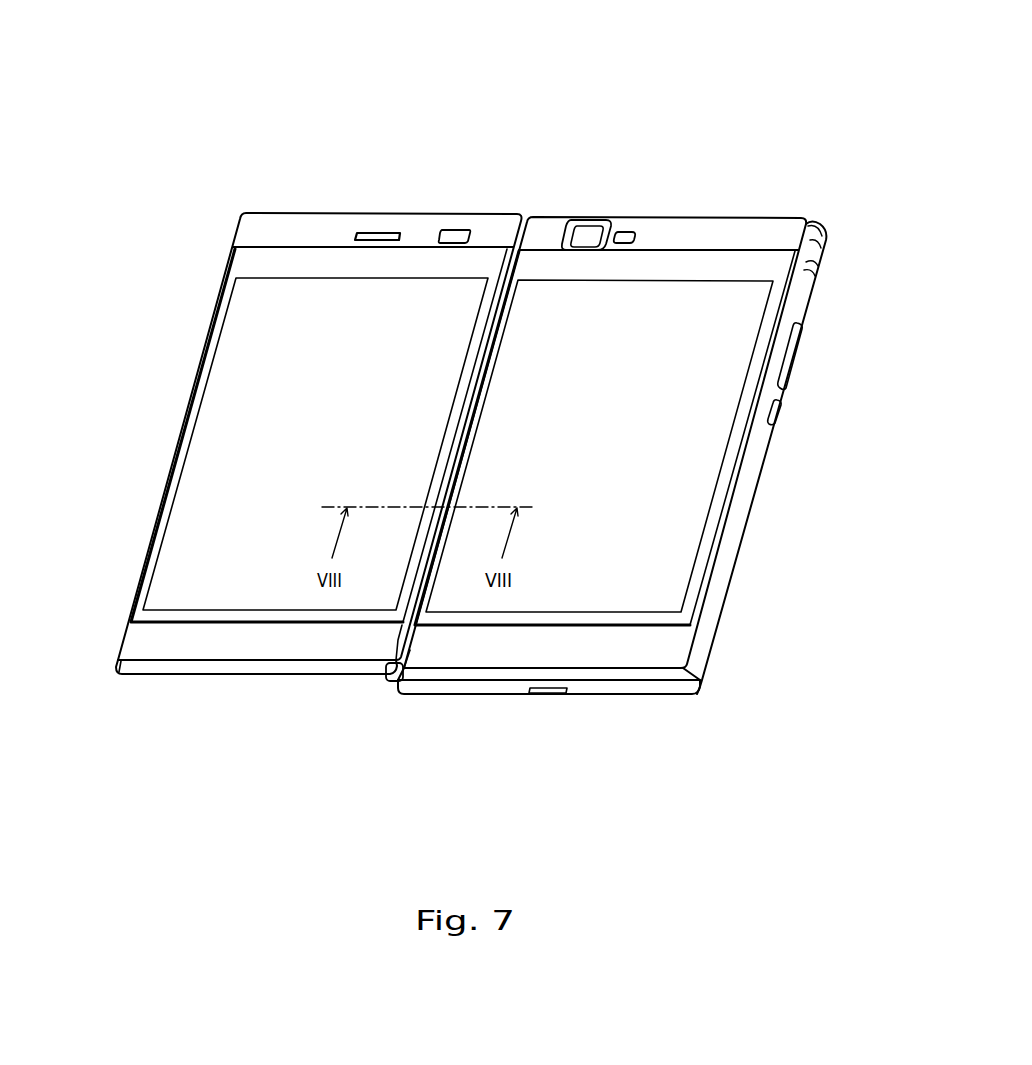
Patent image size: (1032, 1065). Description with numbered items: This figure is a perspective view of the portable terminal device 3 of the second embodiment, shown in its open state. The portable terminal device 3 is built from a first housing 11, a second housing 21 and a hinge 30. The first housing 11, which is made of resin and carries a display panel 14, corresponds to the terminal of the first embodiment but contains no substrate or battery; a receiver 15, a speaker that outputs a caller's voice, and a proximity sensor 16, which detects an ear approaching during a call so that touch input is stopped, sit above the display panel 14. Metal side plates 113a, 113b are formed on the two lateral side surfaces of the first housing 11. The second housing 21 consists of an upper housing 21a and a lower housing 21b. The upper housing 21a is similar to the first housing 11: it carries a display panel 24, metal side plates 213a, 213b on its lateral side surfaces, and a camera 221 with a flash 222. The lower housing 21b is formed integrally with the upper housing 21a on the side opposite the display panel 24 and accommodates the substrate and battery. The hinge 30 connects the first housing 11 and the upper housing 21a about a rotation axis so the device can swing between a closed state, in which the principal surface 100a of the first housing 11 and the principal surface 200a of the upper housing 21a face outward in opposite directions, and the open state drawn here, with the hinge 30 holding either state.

The portable terminal device 3 is at (544, 89).
The first housing 11 is at (399, 95).
The second housing 21 is at (703, 93).
The principal surface 100a is at (268, 220).
The principal surface 200a is at (777, 230).
The display panel 14 is at (252, 263).
The display panel 24 is at (762, 270).
The receiver 15 is at (393, 232).
The proximity sensor 16 is at (460, 230).
The camera 221 is at (588, 237).
The flash 222 is at (628, 237).
The side plate 113b is at (177, 443).
The side plate 113a is at (403, 645).
The inner side surface of second housing 213a is at (400, 625).
The side plate 213b is at (715, 560).
The hinge 30 is at (393, 690).
The upper housing 21a is at (648, 682).
The lower housing 21b is at (580, 695).